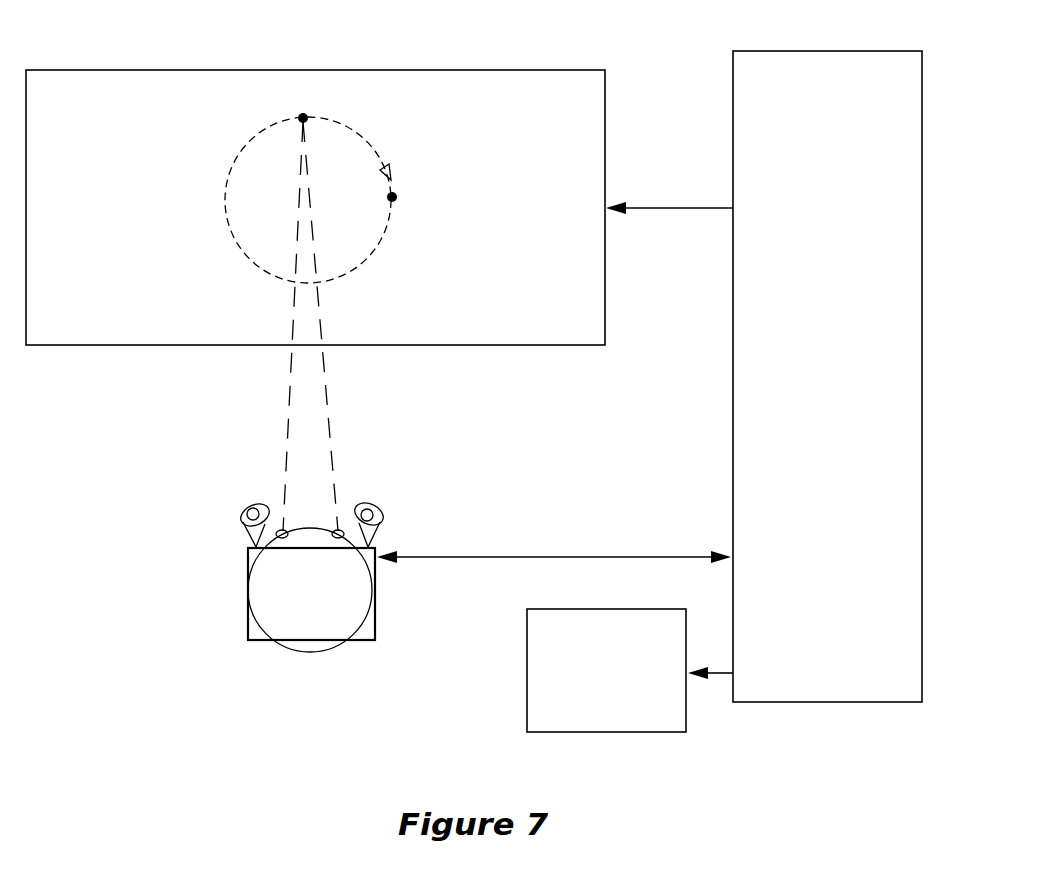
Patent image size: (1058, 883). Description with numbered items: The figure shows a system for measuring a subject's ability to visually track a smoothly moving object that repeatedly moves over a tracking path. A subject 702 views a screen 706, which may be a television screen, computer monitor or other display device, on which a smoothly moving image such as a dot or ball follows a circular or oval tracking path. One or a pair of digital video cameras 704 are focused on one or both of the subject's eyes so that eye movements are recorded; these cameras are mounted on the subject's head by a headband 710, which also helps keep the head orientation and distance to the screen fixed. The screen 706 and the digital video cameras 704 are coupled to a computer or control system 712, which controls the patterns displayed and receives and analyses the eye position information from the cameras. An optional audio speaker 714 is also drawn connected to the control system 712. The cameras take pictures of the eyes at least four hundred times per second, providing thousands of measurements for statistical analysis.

The subject 702 is at (312, 607).
The digital video camera 704 is at (373, 503).
The screen 706 is at (115, 70).
The headband 710 is at (248, 568).
The computer or control system 712 is at (733, 107).
The audio speaker(s) (optional) 714 is at (527, 675).